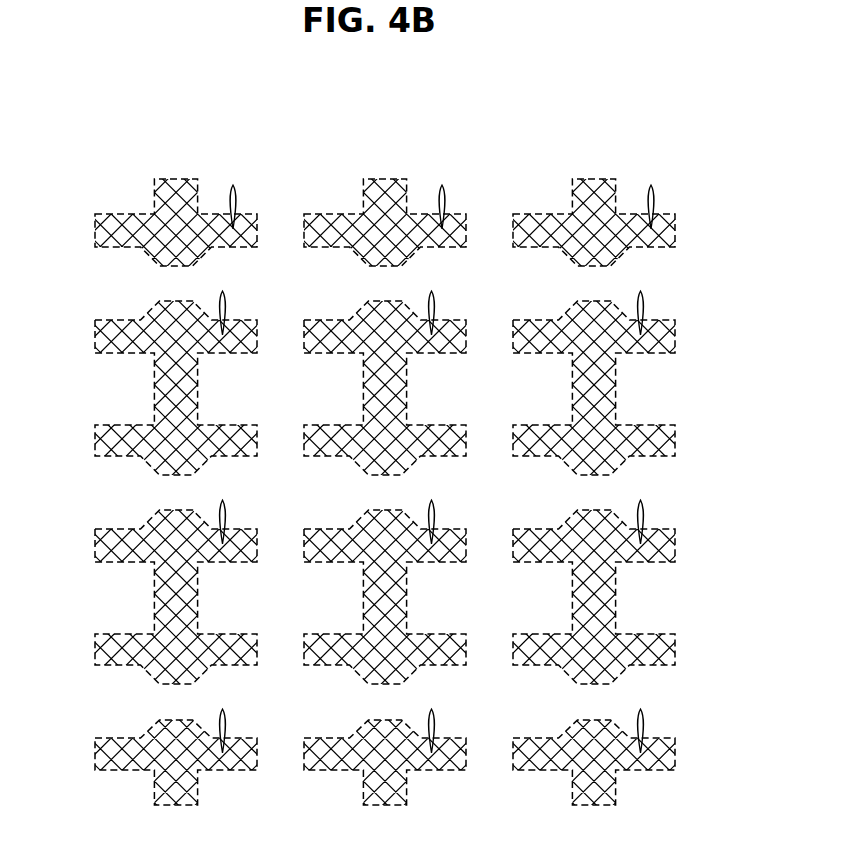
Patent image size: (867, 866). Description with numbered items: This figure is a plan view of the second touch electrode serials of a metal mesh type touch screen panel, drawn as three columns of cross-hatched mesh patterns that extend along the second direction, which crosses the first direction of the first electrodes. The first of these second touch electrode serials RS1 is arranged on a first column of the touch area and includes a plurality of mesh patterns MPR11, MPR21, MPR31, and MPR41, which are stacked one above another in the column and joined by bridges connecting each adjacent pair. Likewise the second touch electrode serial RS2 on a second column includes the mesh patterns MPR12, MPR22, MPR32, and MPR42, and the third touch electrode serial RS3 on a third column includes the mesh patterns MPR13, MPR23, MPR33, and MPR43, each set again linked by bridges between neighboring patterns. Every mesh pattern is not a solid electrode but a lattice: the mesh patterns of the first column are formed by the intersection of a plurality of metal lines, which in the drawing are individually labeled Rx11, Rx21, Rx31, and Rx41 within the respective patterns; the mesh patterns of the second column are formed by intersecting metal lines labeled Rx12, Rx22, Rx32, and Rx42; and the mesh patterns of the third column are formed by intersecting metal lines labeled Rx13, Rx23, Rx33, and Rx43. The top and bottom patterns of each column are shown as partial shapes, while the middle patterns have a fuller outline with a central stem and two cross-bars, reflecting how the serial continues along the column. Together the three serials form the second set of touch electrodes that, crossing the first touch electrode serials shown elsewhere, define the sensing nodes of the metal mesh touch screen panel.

The 2-1 touch electrode serial RS1 is at (257, 142).
The 2-2 touch electrode serial RS2 is at (466, 142).
The 2-3 touch electrode serial RS3 is at (675, 142).
The 2-1 mesh pattern MPR11 is at (161, 211).
The 2-2 mesh pattern MPR12 is at (370, 211).
The 2-3 mesh pattern MPR13 is at (579, 211).
The 2-1 mesh pattern MPR21 is at (161, 372).
The 2-2 mesh pattern MPR22 is at (370, 372).
The 2-3 mesh pattern MPR23 is at (579, 372).
The 2-1 mesh pattern MPR31 is at (161, 581).
The 2-2 mesh pattern MPR32 is at (370, 581).
The 2-3 mesh pattern MPR33 is at (579, 581).
The 2-1 mesh pattern MPR41 is at (161, 758).
The 2-2 mesh pattern MPR42 is at (370, 758).
The 2-3 mesh pattern MPR43 is at (579, 758).
The receiving electrode Rx11 is at (233, 196).
The receiving electrode Rx12 is at (442, 196).
The receiving electrode Rx13 is at (651, 196).
The receiving electrode Rx21 is at (219, 301).
The receiving electrode Rx22 is at (428, 301).
The receiving electrode Rx23 is at (637, 301).
The receiving electrode Rx31 is at (219, 510).
The receiving electrode Rx32 is at (428, 510).
The receiving electrode Rx33 is at (637, 510).
The receiving electrode Rx41 is at (219, 719).
The receiving electrode Rx42 is at (428, 719).
The receiving electrode Rx43 is at (637, 719).